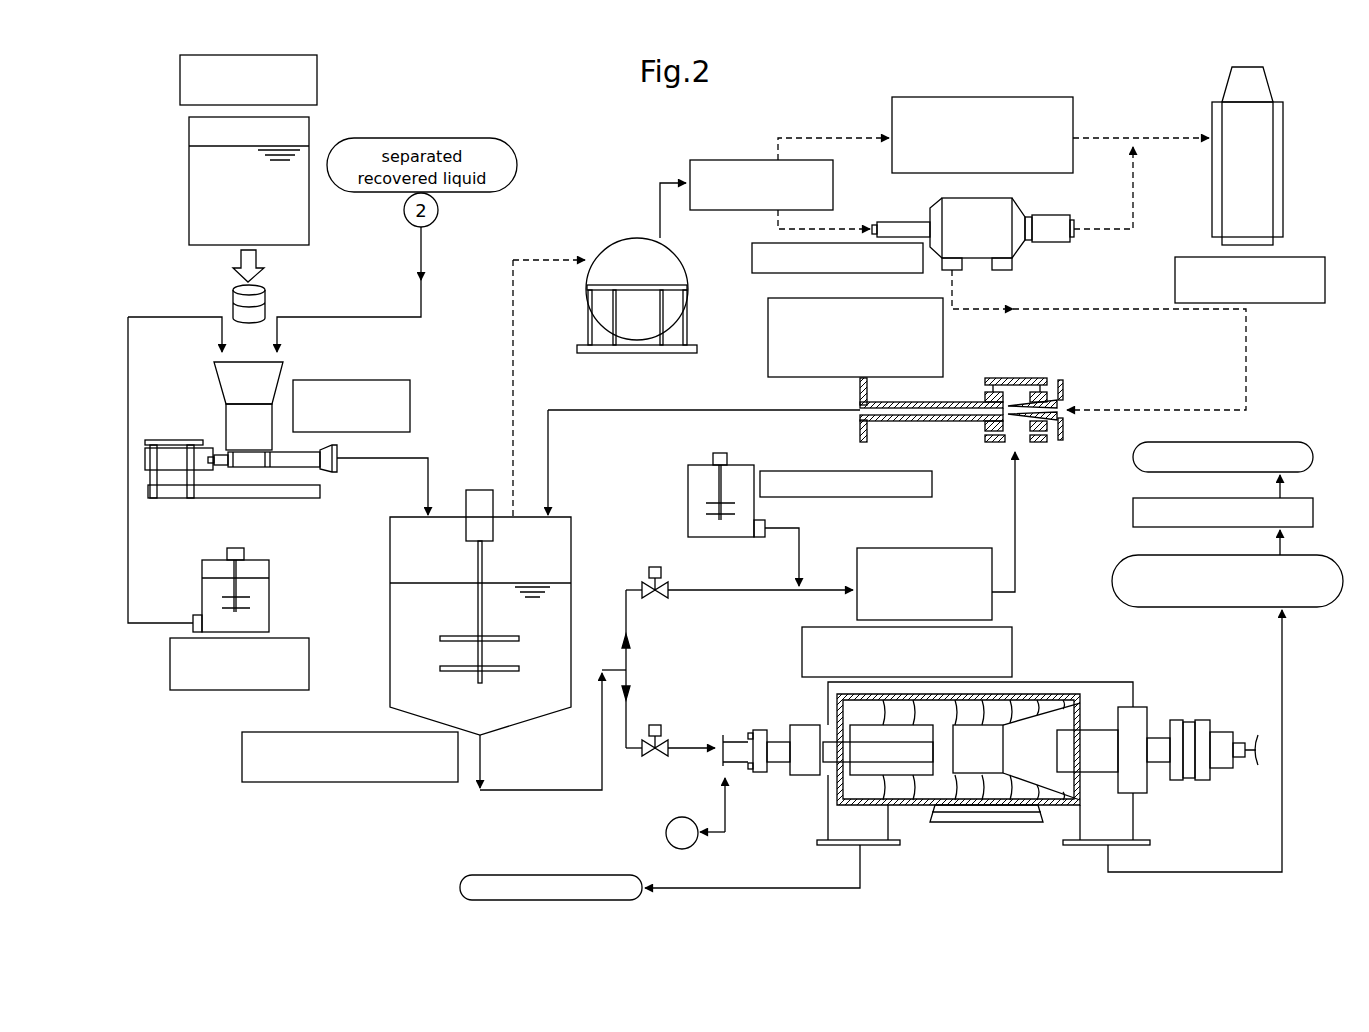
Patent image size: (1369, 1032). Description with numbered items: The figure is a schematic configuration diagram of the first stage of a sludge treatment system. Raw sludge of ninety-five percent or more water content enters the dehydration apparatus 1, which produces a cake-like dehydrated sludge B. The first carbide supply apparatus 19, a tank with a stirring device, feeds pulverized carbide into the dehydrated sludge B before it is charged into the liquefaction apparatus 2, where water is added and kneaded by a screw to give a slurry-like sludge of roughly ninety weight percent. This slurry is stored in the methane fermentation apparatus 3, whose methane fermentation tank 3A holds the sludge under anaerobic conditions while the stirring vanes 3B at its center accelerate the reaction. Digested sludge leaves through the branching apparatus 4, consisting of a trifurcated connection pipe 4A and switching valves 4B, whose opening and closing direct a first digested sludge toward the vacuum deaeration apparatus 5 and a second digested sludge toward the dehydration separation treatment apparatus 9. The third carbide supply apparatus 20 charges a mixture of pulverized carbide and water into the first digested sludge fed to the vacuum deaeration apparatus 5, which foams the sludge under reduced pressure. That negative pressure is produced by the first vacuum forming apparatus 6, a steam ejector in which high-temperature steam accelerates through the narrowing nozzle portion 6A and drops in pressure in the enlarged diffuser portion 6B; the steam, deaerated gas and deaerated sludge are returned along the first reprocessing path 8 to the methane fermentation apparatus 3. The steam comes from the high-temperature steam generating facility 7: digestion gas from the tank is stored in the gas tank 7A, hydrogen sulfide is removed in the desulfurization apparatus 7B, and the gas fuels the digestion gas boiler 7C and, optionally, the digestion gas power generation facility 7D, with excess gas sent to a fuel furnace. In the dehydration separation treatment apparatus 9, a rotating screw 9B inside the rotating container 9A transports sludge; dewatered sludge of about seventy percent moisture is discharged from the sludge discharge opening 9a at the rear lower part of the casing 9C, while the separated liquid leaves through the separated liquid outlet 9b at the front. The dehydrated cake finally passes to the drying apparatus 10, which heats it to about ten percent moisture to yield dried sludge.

The dehydration apparatus 1 is at (189, 152).
The dehydrated sludge B is at (233, 304).
The liquefaction apparatus 2 is at (211, 414).
The first carbide supply apparatus 19 is at (202, 585).
The methane fermentation apparatus 3 is at (450, 600).
The methane fermentation tank 3A is at (571, 548).
The stirring vanes 3B is at (520, 638).
The branching apparatus 4 is at (737, 661).
The trifurcated shaped connection pipe 4A is at (626, 658).
The switching valve 4B is at (665, 598).
The third carbide supply apparatus 20 is at (745, 462).
The vacuum deaeration apparatus 5 is at (930, 550).
The first reprocessing path 8 is at (726, 408).
The first vacuum forming apparatus 6 is at (975, 370).
The nozzle portion 6A is at (1065, 395).
The diffuser portion 6B is at (940, 412).
The high-temperature steam generating facility 7 is at (951, 238).
The gas tank 7A is at (617, 240).
The desulfurization apparatus 7B is at (705, 160).
The digestion gas boiler 7C is at (1003, 243).
The digestion gas power generation facility 7D is at (930, 97).
The dehydration separation treatment apparatus 9 is at (871, 755).
The rotating container 9A is at (920, 752).
The rotating screw 9B is at (1033, 722).
The casing 9C is at (1097, 682).
The sludge discharge opening 9a is at (1085, 847).
The separated liquid outlet 9b is at (905, 848).
The drying apparatus 10 is at (1316, 497).